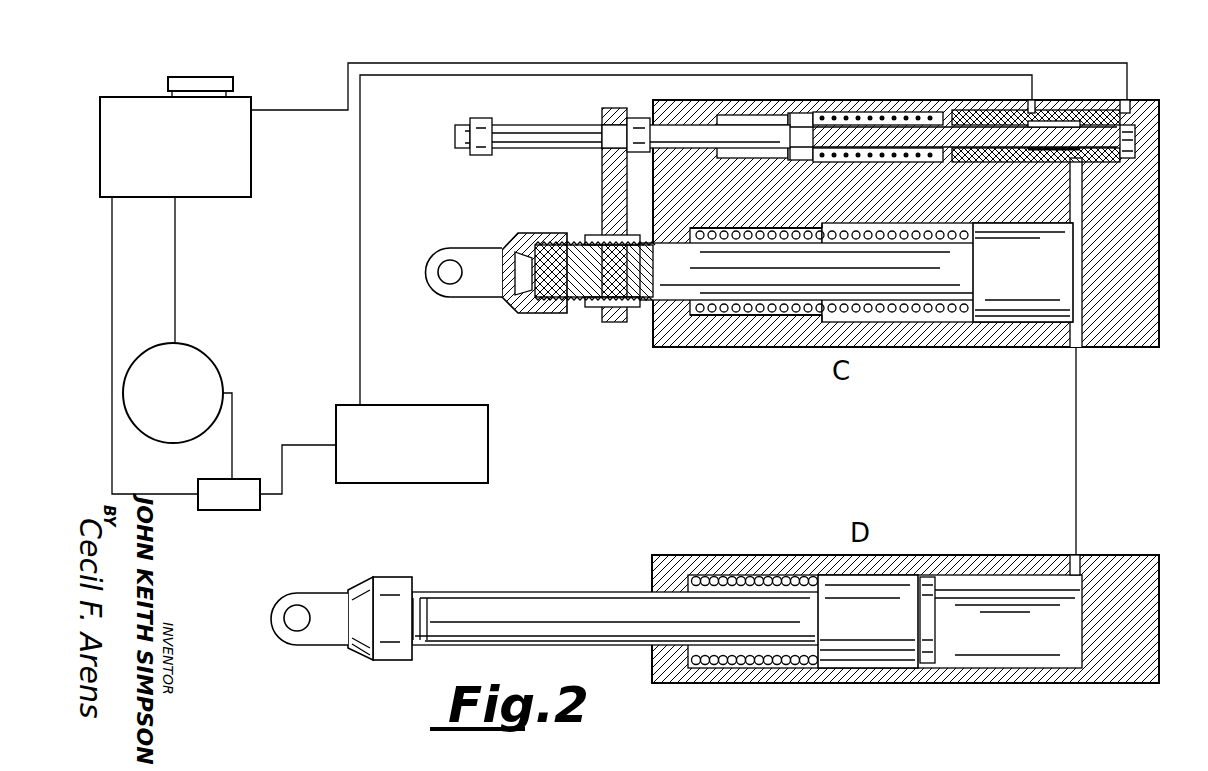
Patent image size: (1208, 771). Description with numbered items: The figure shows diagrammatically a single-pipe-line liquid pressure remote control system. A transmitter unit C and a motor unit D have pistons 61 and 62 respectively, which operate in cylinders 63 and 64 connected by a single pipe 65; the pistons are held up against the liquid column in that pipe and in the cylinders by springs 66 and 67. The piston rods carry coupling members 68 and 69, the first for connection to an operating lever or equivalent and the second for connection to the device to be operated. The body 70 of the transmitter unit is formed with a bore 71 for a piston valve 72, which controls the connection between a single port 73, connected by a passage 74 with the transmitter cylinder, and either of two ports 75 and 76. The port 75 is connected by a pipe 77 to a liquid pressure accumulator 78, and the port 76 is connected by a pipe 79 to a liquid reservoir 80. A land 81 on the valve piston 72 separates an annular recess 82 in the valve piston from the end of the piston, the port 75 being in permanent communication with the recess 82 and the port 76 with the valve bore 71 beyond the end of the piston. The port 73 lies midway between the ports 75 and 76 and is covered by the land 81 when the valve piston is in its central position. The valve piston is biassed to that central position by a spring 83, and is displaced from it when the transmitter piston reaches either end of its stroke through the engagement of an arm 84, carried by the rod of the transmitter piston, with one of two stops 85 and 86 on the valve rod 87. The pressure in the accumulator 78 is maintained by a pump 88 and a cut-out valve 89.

The piston 61 is at (1023, 272).
The piston 62 is at (868, 621).
The cylinder 63 is at (948, 318).
The cylinder 64 is at (978, 575).
The single pipe 65 is at (1078, 442).
The spring 66 is at (782, 308).
The spring 67 is at (750, 578).
The coupling member 68 is at (462, 258).
The coupling member 69 is at (318, 600).
The body 70 is at (1140, 232).
The bore 71 is at (868, 112).
The piston valve 72 is at (1005, 128).
The port 73 is at (1082, 160).
The passage 74 is at (1076, 192).
The port 75 is at (1036, 104).
The port 76 is at (1128, 104).
The pipe 77 is at (668, 75).
The liquid pressure accumulator 78 is at (412, 444).
The pipe 79 is at (584, 66).
The liquid reservoir 80 is at (175, 137).
The land 81 is at (1100, 125).
The annular recess 82 is at (1060, 128).
The spring 83 is at (905, 112).
The arm 84 is at (600, 198).
The stop 85 is at (482, 125).
The stop 86 is at (640, 125).
The valve rod 87 is at (535, 135).
The pump 88 is at (173, 393).
The cut-out valve 89 is at (229, 494).